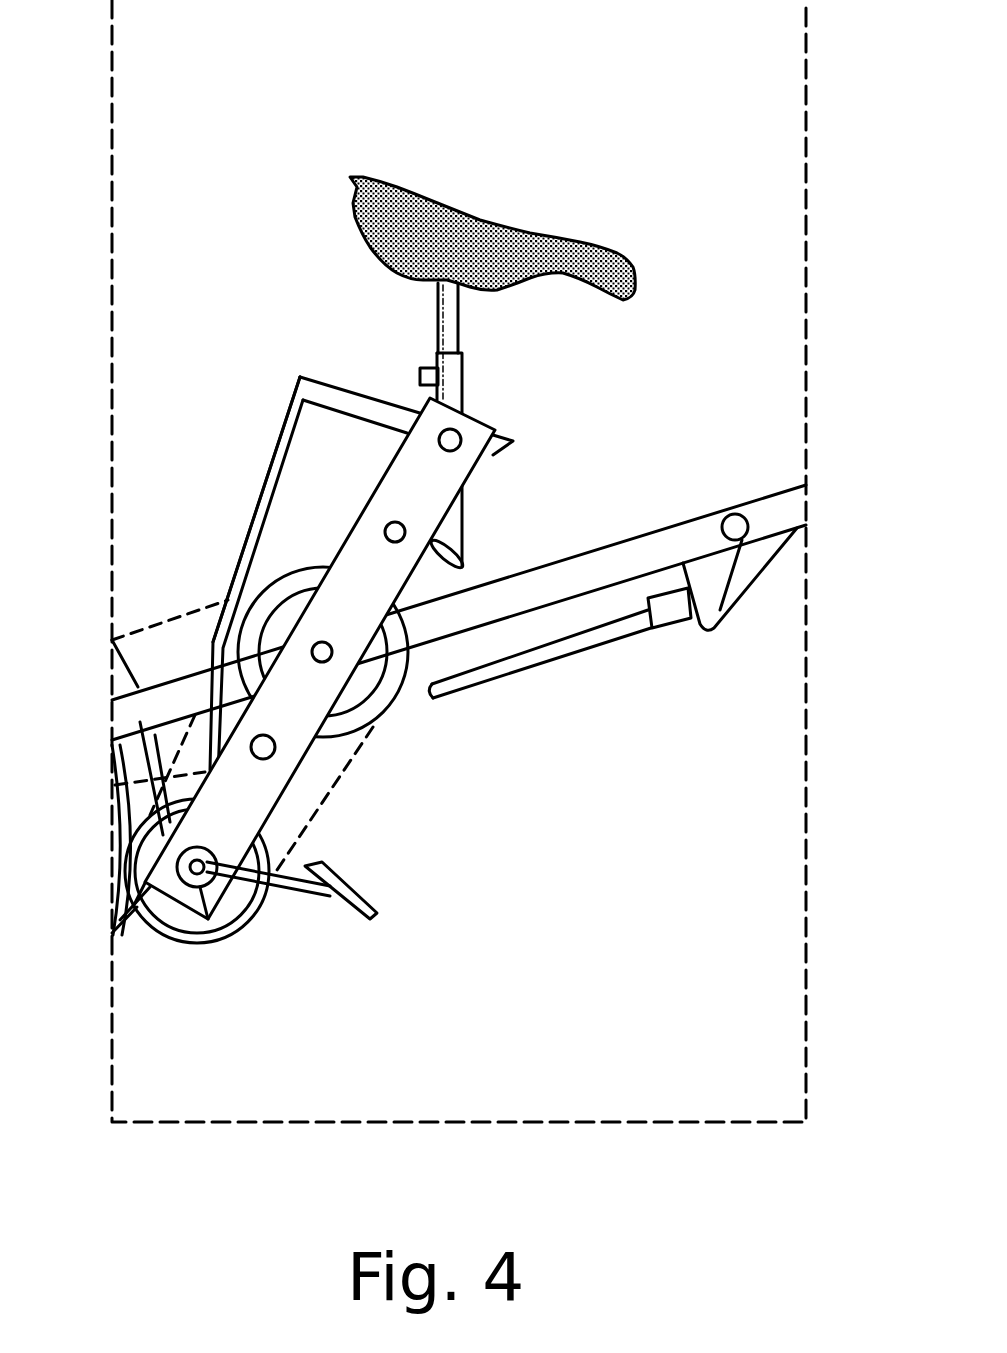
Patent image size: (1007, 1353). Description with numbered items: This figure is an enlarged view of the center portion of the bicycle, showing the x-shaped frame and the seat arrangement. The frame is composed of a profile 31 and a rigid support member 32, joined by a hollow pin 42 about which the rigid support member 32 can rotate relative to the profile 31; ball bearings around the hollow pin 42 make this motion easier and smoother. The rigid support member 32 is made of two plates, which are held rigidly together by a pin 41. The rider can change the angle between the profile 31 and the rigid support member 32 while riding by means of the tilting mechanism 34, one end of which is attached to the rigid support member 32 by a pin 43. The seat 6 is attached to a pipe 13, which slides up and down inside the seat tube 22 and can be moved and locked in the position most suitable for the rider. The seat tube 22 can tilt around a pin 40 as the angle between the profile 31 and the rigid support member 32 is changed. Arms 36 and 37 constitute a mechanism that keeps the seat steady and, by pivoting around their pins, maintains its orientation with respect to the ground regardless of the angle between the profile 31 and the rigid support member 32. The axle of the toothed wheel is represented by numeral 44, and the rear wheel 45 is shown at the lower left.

The saddle 6 is at (468, 225).
The pipe 13 is at (447, 332).
The seat tube 22 is at (460, 523).
The profile 31 is at (685, 523).
The rigid support member 32 is at (305, 733).
The tilting mechanism 34 is at (555, 647).
The arm 36 is at (333, 393).
The arm 37 is at (262, 482).
The pin 40 is at (455, 437).
The pin 41 is at (385, 532).
The hollow pin 42 is at (312, 647).
The pin 43 is at (270, 757).
The axle of the toothed wheel 44 is at (200, 875).
The rear wheel 45 is at (207, 770).